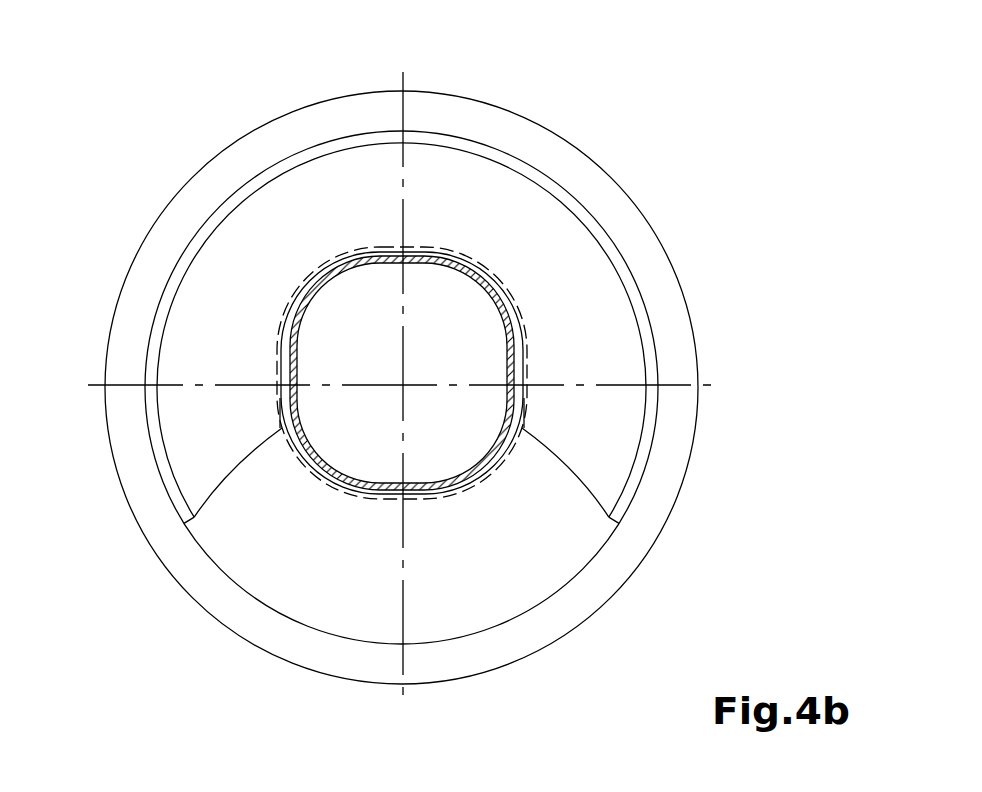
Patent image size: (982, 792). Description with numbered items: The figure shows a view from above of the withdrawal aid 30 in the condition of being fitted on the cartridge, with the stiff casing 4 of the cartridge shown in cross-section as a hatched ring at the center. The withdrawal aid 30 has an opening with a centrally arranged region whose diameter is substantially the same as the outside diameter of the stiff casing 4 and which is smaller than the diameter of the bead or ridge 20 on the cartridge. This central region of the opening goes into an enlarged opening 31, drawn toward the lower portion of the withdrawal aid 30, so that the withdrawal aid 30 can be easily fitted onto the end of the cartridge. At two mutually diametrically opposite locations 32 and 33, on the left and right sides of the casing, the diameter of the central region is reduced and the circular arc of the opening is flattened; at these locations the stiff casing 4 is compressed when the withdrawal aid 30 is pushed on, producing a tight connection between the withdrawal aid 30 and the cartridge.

The stiff casing 4 is at (457, 273).
The bead or ridge 20 is at (330, 473).
The withdrawal aid 30 is at (568, 275).
The enlarged opening 31 is at (517, 552).
The flattened location 32 is at (285, 365).
The flattened location 33 is at (520, 372).